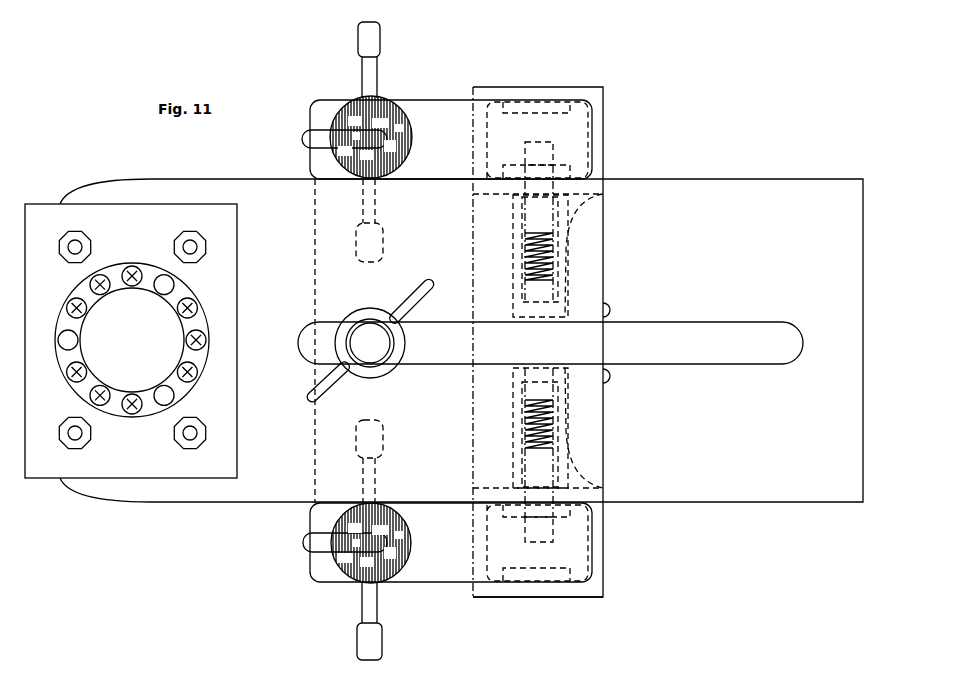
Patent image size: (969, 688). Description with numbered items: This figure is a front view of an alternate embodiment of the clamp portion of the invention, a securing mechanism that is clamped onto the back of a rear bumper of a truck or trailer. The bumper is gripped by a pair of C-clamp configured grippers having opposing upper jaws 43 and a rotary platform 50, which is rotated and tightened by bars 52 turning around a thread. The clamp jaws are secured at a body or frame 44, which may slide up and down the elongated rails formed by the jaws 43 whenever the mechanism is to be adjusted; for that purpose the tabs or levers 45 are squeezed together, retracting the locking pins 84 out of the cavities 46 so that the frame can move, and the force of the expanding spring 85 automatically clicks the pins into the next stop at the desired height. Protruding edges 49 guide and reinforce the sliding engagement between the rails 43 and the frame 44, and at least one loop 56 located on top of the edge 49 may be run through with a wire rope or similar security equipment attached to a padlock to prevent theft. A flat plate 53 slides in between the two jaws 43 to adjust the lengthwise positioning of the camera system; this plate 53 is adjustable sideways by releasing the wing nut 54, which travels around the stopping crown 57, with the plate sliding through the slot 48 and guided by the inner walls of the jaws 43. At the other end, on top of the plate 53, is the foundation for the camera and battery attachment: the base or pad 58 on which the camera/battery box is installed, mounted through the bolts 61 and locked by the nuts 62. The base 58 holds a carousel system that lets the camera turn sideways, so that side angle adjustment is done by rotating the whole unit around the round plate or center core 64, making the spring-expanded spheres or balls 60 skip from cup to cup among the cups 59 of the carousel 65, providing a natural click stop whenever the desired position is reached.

The upper jaws 43 is at (457, 103).
The frame 44 is at (598, 588).
The levers 45 is at (608, 310).
The cavities 46 is at (542, 148).
The slot 48 is at (687, 352).
The protruding edges 49 is at (578, 112).
The rotary platform 50 is at (382, 93).
The bars 52 is at (372, 38).
The flat plate 53 is at (683, 201).
The wing nut 54 is at (408, 300).
The loop 56 is at (313, 138).
The stopping crown 57 is at (378, 352).
The base 58 is at (43, 212).
The cups 59 is at (100, 404).
The spheres 60 is at (64, 347).
The bolts 61 is at (72, 436).
The nuts 62 is at (83, 445).
The round plate 64 is at (138, 305).
The carousel 65 is at (180, 292).
The locking pins 84 is at (543, 212).
The expanding spring 85 is at (553, 257).